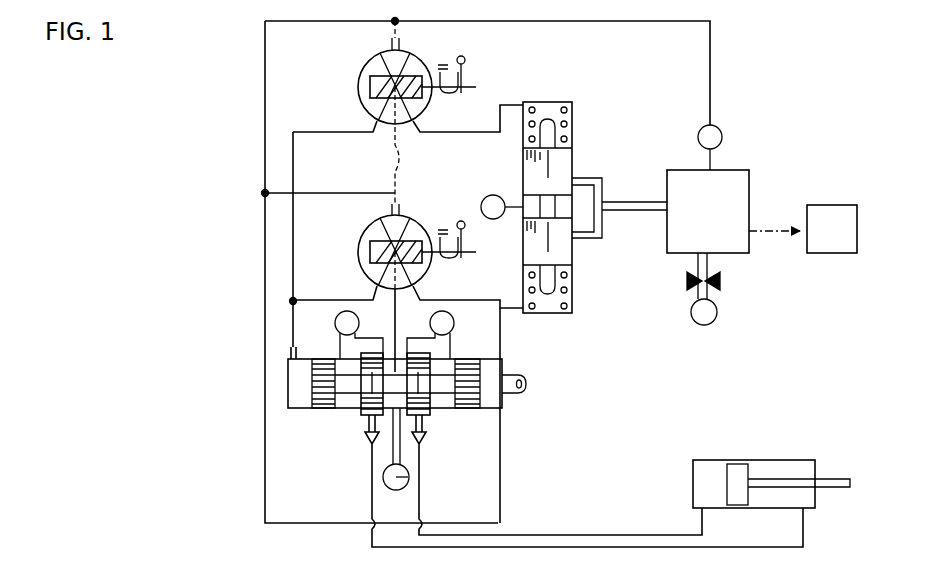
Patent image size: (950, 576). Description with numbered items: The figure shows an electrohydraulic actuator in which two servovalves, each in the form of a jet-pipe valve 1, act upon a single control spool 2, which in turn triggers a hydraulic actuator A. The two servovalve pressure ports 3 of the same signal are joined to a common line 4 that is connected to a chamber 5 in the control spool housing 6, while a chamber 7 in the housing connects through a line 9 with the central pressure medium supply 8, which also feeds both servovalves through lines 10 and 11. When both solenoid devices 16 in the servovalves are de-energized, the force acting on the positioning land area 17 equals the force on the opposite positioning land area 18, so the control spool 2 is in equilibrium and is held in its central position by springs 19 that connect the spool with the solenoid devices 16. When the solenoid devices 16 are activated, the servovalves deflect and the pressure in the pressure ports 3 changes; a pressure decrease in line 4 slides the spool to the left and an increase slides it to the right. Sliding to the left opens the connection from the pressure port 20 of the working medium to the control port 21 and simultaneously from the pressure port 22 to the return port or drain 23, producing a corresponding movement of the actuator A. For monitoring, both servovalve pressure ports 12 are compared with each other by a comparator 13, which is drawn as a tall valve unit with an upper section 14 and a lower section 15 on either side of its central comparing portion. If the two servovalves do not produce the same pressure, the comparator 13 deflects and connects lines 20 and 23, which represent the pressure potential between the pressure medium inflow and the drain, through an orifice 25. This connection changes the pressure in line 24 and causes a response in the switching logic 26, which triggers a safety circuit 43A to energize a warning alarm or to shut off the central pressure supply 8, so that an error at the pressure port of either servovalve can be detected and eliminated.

The jet-pipe valve 1 is at (358, 65).
The control spool 2 is at (510, 397).
The servovalve pressure ports 3 is at (378, 120).
The common line 4 is at (292, 316).
The chamber 5 is at (300, 397).
The control spool housing 6 is at (284, 370).
The chamber 7 is at (486, 408).
The central pressure medium supply 8 is at (712, 137).
The line 9 is at (265, 503).
The line 10 is at (395, 23).
The line 11 is at (327, 193).
The servovalve pressure ports 12 is at (425, 131).
The comparator 13 is at (557, 160).
The pilot operated valve 14 is at (548, 108).
The valve lower section 15 is at (550, 308).
The solenoid devices 16 is at (467, 68).
The positioning land area 17 is at (290, 381).
The opposite positioning land area 18 is at (505, 366).
The springs 19 is at (397, 148).
The pressure port 20 is at (335, 323).
The control port 21 is at (427, 441).
The pressure port 22 is at (365, 441).
The return port or drain 23 is at (410, 477).
The line 24 is at (637, 207).
The orifice 25 is at (722, 281).
The switching logic 26 is at (715, 210).
The safety circuit 43A is at (830, 205).
The hydraulic actuator A is at (757, 457).